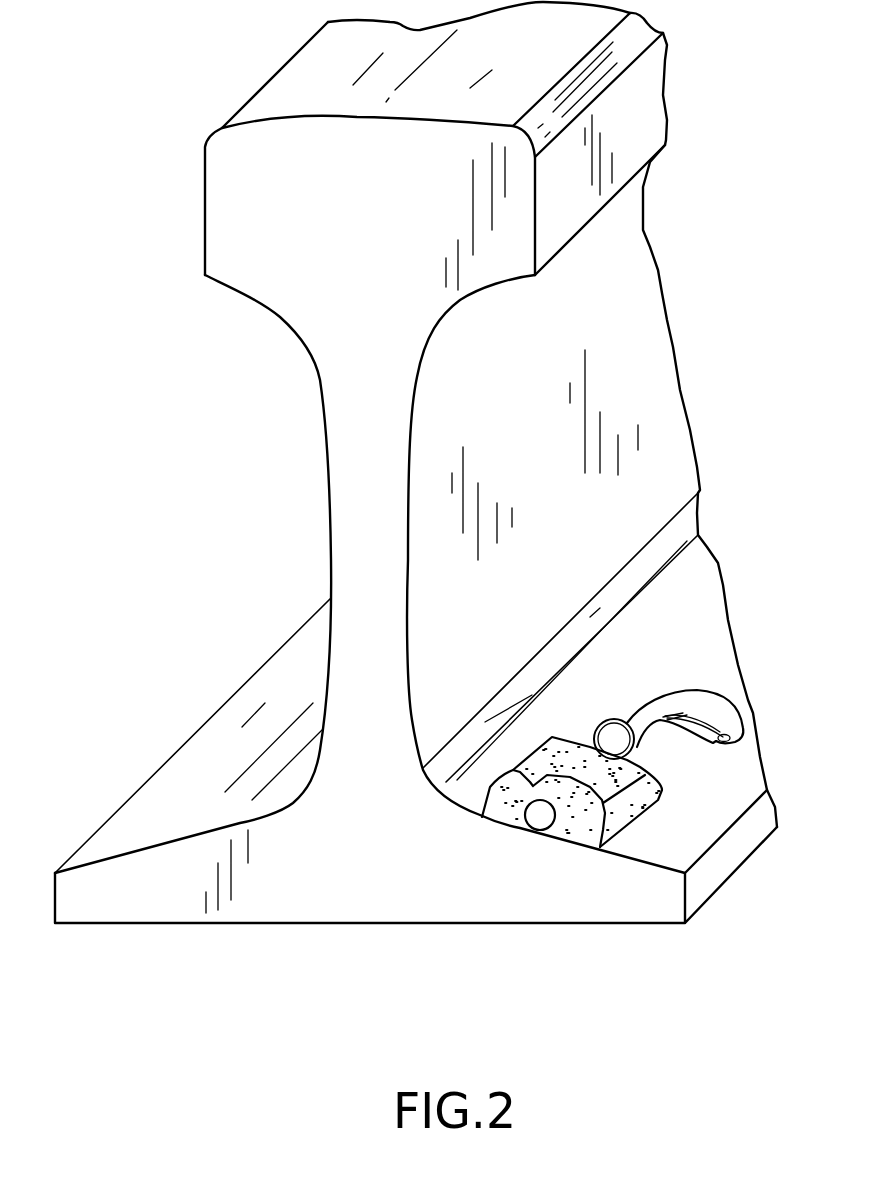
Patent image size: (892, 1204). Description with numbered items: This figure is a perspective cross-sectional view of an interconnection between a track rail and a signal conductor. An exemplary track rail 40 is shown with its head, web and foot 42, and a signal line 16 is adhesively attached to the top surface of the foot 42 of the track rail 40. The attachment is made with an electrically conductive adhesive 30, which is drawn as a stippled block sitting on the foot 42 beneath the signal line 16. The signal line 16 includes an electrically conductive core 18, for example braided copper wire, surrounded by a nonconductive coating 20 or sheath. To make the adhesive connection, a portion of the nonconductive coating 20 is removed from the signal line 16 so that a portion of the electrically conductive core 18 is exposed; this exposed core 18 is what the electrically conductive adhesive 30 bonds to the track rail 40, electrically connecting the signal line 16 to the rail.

The signal line 16 is at (667, 692).
The electrically conductive core 18 is at (608, 742).
The nonconductive coating 20 is at (630, 720).
The electrically conductive adhesive 30 is at (631, 826).
The track rail 40 is at (320, 571).
The foot 42 is at (488, 900).